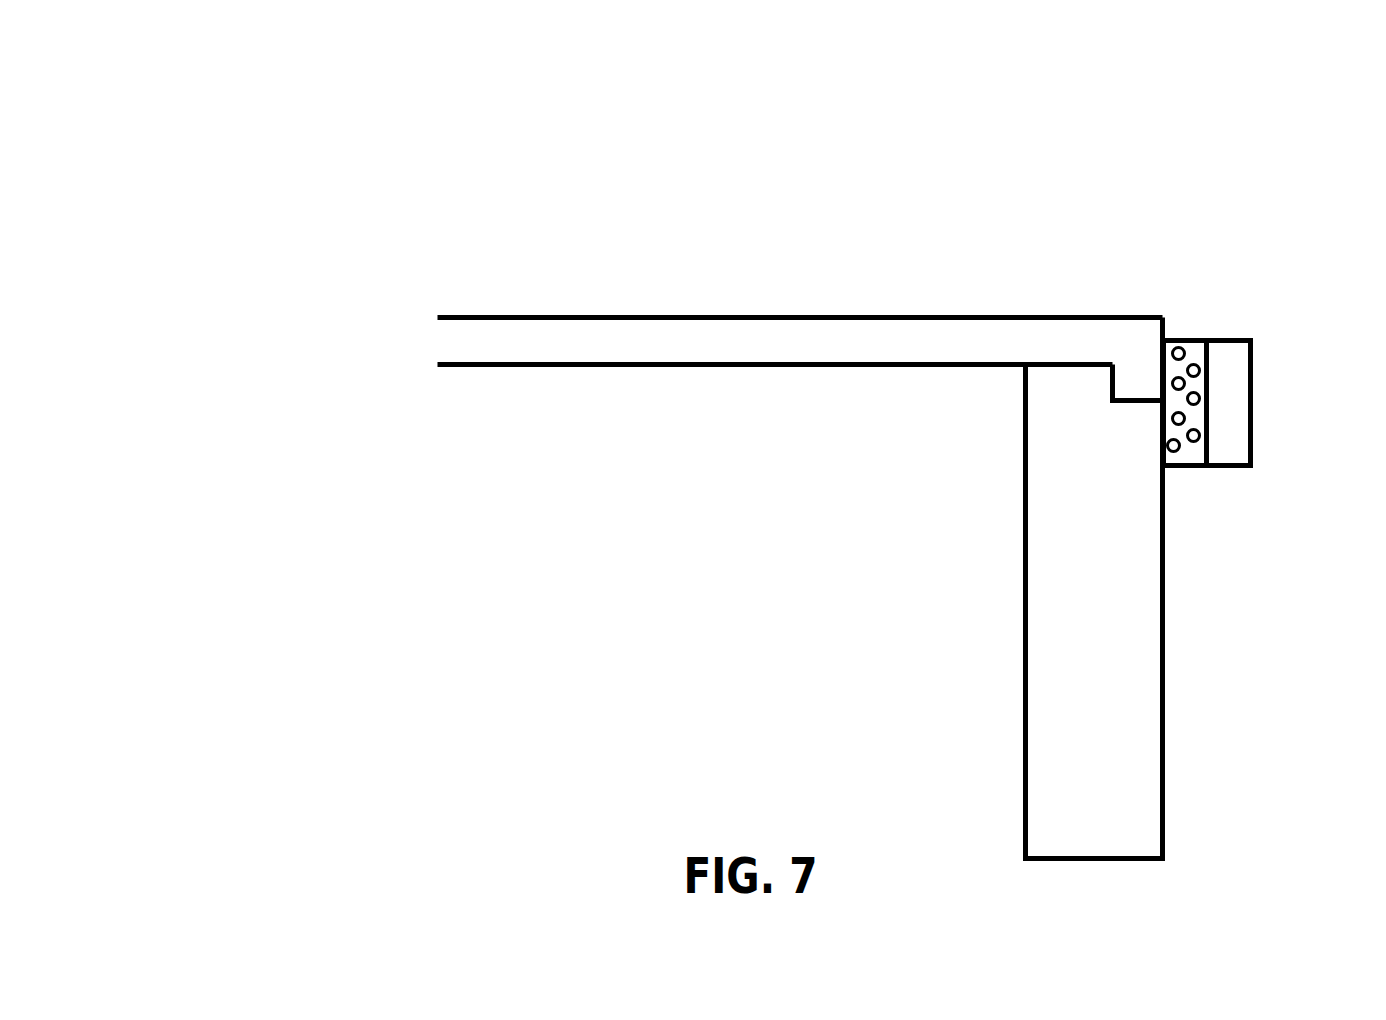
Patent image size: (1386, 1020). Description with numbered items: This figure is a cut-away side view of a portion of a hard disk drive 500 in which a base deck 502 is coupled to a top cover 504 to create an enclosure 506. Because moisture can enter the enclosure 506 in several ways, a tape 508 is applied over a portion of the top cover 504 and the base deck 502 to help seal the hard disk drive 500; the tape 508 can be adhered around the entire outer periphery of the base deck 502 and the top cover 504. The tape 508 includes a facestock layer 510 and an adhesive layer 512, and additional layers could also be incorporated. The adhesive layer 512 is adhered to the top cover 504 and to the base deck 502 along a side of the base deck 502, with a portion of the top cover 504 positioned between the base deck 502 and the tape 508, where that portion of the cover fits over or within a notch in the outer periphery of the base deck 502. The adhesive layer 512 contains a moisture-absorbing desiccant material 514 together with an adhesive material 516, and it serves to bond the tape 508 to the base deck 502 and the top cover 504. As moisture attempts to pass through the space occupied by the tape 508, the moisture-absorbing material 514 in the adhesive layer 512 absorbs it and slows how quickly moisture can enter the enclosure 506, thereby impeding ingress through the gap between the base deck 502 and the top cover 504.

The hard disk drive 500 is at (246, 138).
The base deck 502 is at (1038, 594).
The top cover 504 is at (652, 350).
The enclosure 506 is at (866, 513).
The tape 508 is at (1298, 555).
The facestock layer 510 is at (1238, 360).
The adhesive layer 512 is at (1162, 405).
The moisture-absorbing material 514 is at (1177, 340).
The adhesive material 516 is at (1190, 453).